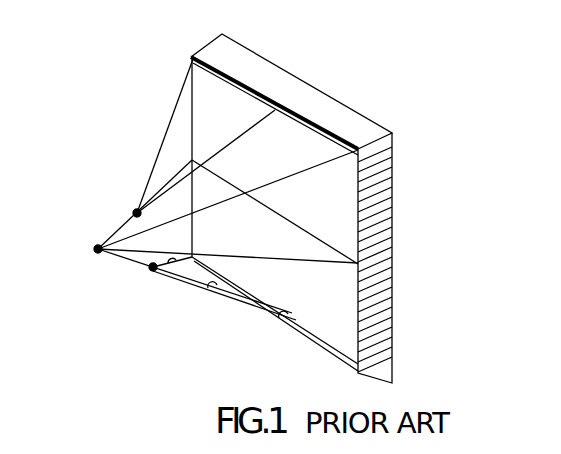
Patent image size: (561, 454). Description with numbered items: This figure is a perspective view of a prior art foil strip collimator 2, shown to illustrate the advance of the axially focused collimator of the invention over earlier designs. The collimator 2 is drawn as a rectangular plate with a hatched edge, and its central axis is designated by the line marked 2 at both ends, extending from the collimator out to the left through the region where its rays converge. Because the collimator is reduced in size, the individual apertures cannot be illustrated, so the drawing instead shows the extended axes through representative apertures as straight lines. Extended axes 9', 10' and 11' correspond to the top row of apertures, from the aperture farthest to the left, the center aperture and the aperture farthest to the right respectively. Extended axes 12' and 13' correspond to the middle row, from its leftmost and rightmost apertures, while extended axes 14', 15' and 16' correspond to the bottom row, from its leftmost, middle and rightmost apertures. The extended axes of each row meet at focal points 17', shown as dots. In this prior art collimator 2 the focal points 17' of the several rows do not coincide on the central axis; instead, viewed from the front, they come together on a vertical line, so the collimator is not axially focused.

The prior art foil strip collimator 2 is at (330, 93).
The extended axis 9' is at (154, 136).
The extended axis 10' is at (233, 108).
The extended axis 11' is at (259, 163).
The extended axis 12' is at (128, 204).
The extended axis 13' is at (228, 281).
The extended axis 14' is at (172, 294).
The extended axis 15' is at (197, 300).
The extended axis 16' is at (275, 325).
The focal points 17' is at (105, 239).